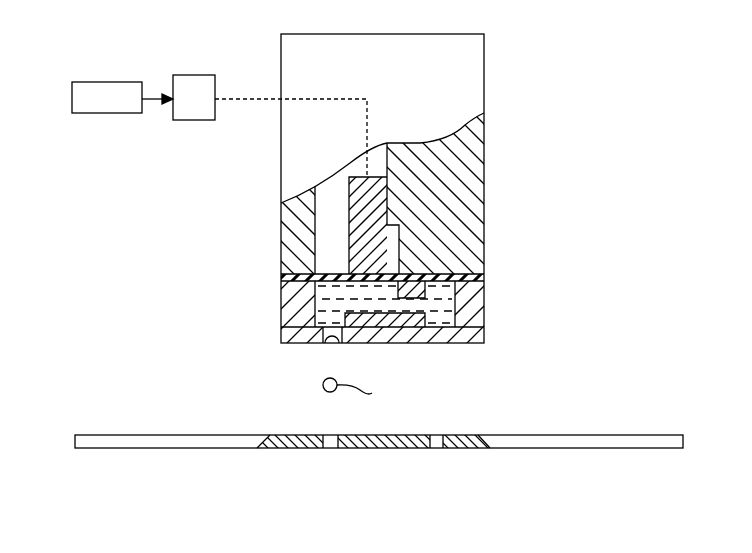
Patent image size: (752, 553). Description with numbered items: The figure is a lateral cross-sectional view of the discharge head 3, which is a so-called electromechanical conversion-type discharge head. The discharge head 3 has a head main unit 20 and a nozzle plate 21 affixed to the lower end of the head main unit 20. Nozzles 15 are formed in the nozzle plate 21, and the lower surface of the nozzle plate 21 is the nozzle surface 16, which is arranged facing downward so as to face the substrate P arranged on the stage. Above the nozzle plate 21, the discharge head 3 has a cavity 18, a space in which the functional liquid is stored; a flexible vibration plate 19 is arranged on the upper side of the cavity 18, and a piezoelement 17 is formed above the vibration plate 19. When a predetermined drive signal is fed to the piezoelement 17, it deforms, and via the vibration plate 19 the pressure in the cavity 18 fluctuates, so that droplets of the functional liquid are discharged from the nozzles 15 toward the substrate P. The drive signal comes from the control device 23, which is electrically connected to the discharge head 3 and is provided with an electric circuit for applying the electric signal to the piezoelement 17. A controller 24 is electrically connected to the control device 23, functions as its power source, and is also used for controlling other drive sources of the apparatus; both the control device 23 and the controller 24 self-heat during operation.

The discharge head 3 is at (493, 88).
The nozzle 15 is at (327, 344).
The nozzle surface 16 is at (443, 344).
The piezoelement 17 is at (355, 220).
The cavity 18 is at (322, 300).
The vibration plate 19 is at (328, 275).
The head main unit 20 is at (484, 232).
The nozzle plate 21 is at (484, 337).
The control device 23 is at (195, 75).
The controller 24 is at (108, 82).
The substrate P is at (633, 435).